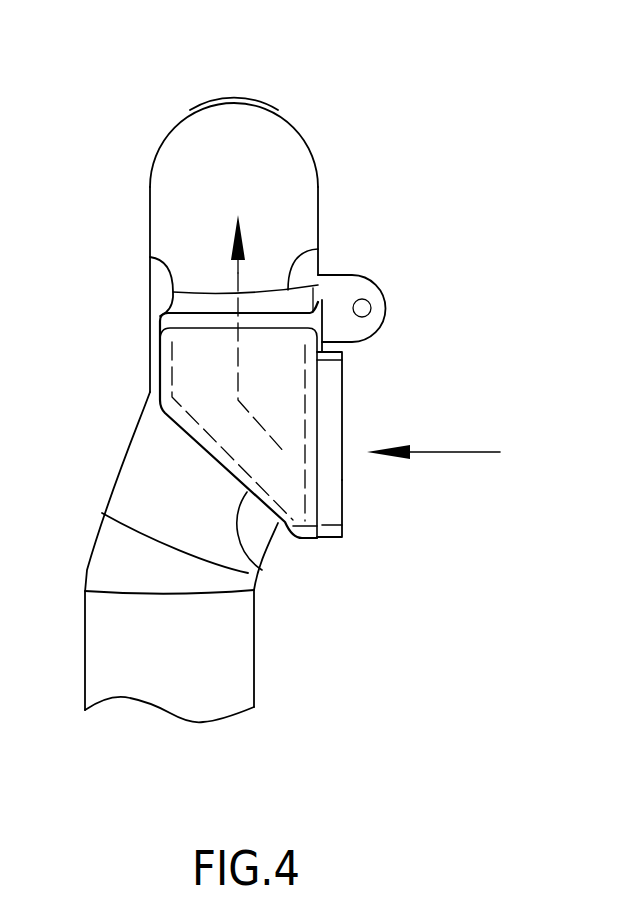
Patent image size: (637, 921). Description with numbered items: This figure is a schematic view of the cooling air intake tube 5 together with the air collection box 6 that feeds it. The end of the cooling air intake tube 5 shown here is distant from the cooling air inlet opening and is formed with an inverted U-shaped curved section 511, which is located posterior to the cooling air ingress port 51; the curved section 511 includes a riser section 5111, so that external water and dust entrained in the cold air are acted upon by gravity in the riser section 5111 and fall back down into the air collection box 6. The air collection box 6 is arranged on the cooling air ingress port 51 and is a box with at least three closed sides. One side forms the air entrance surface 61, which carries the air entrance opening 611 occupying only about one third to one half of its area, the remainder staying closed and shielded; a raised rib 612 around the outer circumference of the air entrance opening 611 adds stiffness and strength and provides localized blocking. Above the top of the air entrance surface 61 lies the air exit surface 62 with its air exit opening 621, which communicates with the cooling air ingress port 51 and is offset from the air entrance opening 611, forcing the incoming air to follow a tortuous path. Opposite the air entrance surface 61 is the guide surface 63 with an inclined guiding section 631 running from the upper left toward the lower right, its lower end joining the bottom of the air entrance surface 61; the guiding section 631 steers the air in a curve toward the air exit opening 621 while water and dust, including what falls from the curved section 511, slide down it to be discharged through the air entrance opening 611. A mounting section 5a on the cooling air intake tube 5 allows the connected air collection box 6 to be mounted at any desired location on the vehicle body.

The cooling air intake tube 5 is at (318, 114).
The curved section 511 is at (232, 103).
The riser section 5111 is at (180, 227).
The cooling air ingress port 51 is at (318, 249).
The mounting section 5a is at (372, 305).
The air collection box 6 is at (390, 414).
The air exit surface 62 is at (190, 322).
The air exit opening 621 is at (215, 292).
The guiding section 631 is at (213, 443).
The guide surface 63 is at (257, 567).
The air entrance surface 61 is at (318, 480).
The air entrance opening 611 is at (330, 508).
The raised rib 612 is at (335, 390).